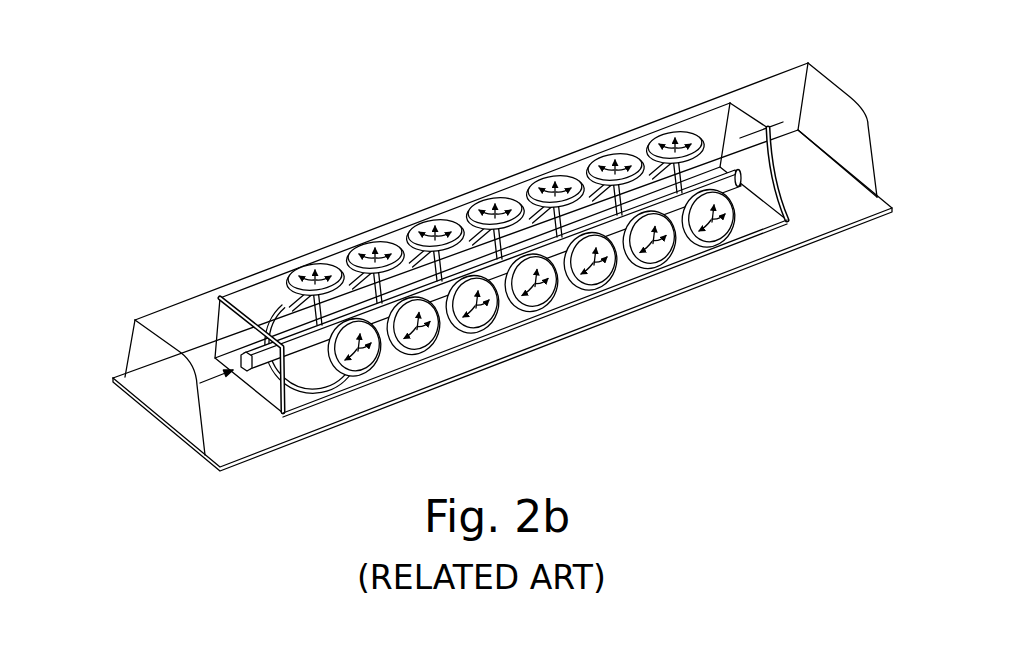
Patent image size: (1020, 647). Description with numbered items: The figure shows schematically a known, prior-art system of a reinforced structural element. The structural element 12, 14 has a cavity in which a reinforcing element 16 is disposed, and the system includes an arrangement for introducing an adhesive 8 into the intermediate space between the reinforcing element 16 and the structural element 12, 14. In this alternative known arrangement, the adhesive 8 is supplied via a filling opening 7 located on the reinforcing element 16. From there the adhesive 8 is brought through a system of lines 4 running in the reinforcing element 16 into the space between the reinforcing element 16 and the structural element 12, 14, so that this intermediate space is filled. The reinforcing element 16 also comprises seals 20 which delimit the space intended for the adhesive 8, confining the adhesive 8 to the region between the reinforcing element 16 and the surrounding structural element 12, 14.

The system of lines 4 is at (305, 355).
The filling opening 7 is at (243, 378).
The adhesive 8 is at (675, 263).
The structural element 12 is at (481, 259).
The structural element 14 is at (167, 322).
The reinforcing element 16 is at (715, 127).
The seals 20 is at (246, 314).